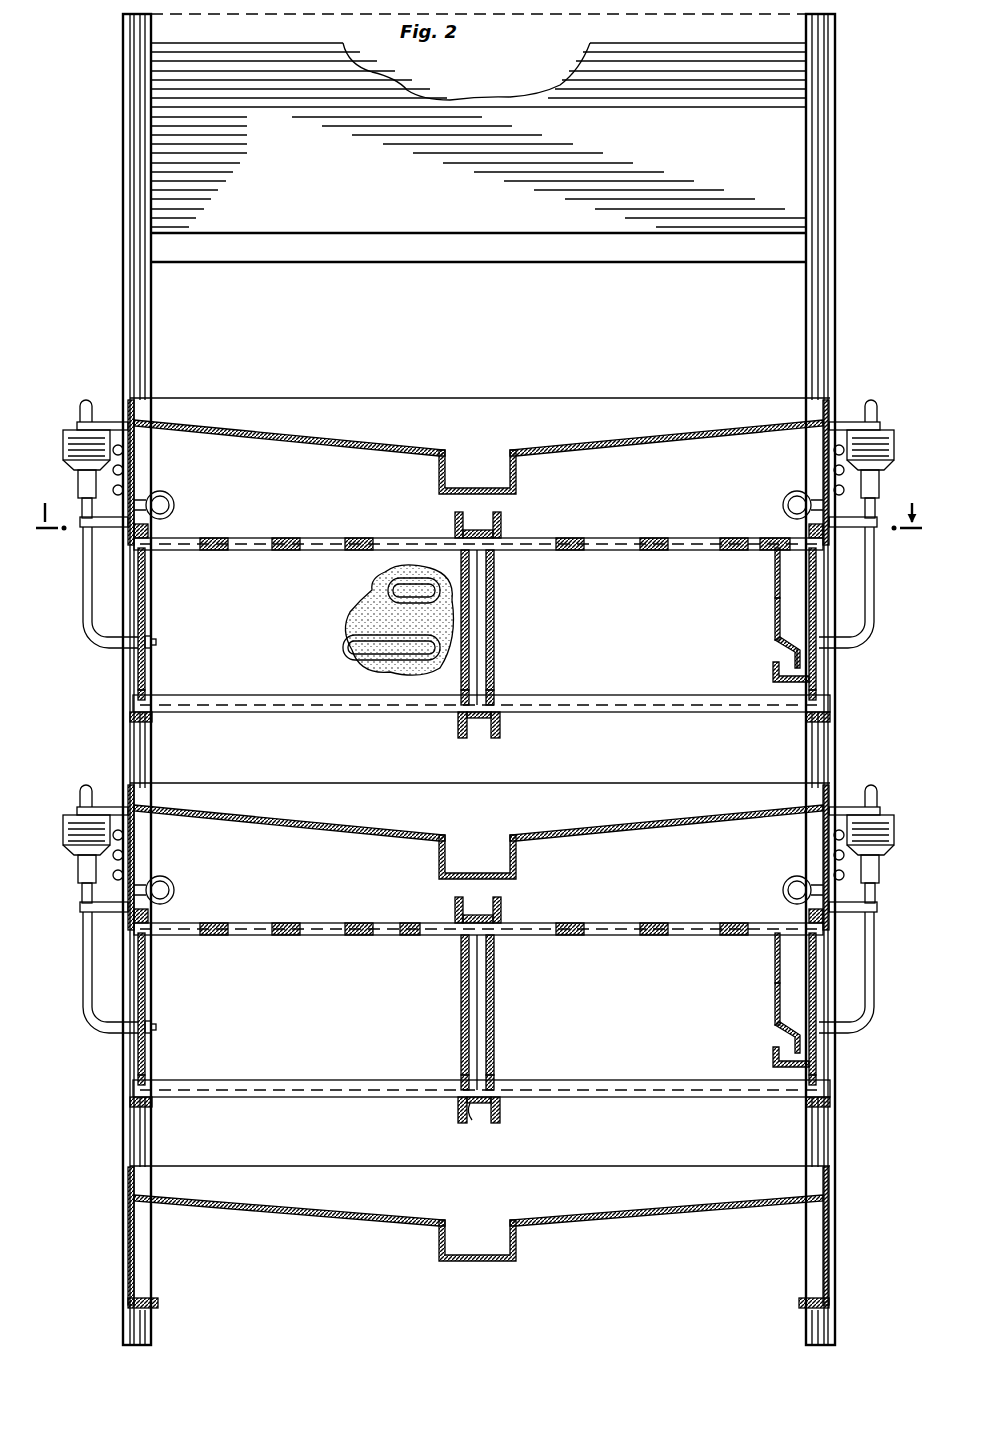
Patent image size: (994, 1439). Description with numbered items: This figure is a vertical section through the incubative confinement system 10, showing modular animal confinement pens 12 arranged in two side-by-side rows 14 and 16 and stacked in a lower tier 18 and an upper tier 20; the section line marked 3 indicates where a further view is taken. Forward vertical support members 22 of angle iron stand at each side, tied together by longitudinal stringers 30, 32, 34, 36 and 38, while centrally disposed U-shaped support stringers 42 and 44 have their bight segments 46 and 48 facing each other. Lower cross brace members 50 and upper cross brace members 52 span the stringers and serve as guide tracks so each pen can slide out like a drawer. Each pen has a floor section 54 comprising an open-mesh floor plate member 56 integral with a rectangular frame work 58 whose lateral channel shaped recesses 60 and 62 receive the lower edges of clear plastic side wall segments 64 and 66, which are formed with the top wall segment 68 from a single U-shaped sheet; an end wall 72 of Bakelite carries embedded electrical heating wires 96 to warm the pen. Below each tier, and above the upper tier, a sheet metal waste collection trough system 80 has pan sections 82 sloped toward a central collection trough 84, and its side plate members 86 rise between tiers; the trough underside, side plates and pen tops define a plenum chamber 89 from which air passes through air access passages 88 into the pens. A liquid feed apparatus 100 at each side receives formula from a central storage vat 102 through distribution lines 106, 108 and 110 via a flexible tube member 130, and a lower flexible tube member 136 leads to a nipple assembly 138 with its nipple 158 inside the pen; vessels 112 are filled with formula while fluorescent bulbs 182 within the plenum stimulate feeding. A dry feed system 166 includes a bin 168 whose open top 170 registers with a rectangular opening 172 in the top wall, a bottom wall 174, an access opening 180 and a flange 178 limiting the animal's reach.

The incubative confinement system 10 is at (870, 125).
The modular animal confinement pen 12 is at (458, 820).
The row 14 is at (285, 352).
The row 16 is at (695, 355).
The tier 18 is at (100, 1057).
The tier 20 is at (100, 672).
The forward vertical support member 22 is at (135, 190).
The longitudinal stringer 30 is at (155, 1300).
The longitudinal stringer 32 is at (152, 1104).
The longitudinal stringer 34 is at (150, 922).
The longitudinal stringer 36 is at (152, 718).
The longitudinal stringer 38 is at (150, 535).
The U-shaped support stringer 42 is at (500, 727).
The U-shaped support stringer 44 is at (500, 520).
The bight segment 46 is at (478, 1122).
The bight segment 48 is at (478, 912).
The lower cross brace member 50 is at (400, 712).
The upper cross brace member 52 is at (405, 535).
The floor section 54 is at (332, 718).
The floor plate member 56 is at (283, 697).
The frame work 58 is at (243, 712).
The channel shaped recess 60 is at (148, 698).
The channel shaped recess 62 is at (462, 703).
The side wall segment 64 is at (146, 588).
The side wall segment 66 is at (494, 602).
The top wall segment 68 is at (355, 543).
The end wall 72 is at (236, 565).
The waste collection trough system 80 is at (480, 798).
The pan section 82 is at (312, 437).
The central collection trough 84 is at (518, 470).
The side plate member 86 is at (822, 462).
The air access passage 88 is at (285, 540).
The plenum chamber 89 is at (478, 678).
The electrical heating wire 96 is at (372, 620).
The liquid feed apparatus 100 is at (70, 392).
The central storage vat 102 is at (478, 135).
The distribution line 106 is at (125, 450).
The distribution line 108 is at (128, 470).
The distribution line 110 is at (125, 490).
The vessel 112 is at (75, 435).
The flexible tube member 130 is at (88, 400).
The flexible tube member 136 is at (83, 622).
The nipple assembly 138 is at (160, 634).
The nipple 158 is at (156, 648).
The dry feed system 166 is at (770, 600).
The bin 168 is at (776, 575).
The open top 170 is at (805, 530).
The rectangular opening 172 is at (790, 540).
The wall 174 is at (778, 672).
The flange 178 is at (796, 645).
The access opening 180 is at (782, 660).
The fluorescent bulb 182 is at (174, 505).
The section line 3 is at (479, 506).